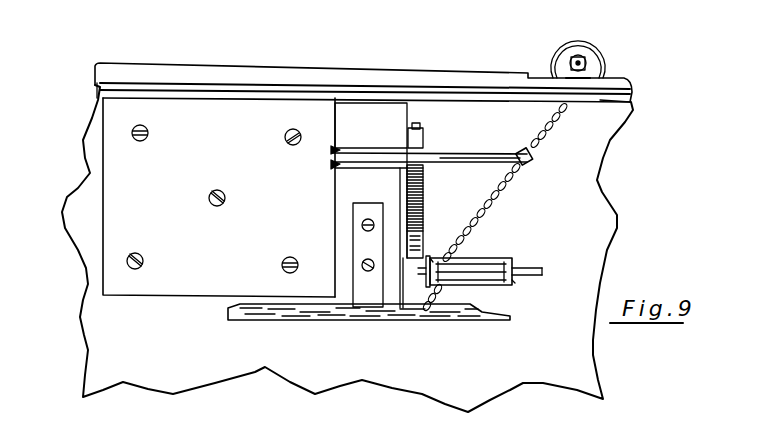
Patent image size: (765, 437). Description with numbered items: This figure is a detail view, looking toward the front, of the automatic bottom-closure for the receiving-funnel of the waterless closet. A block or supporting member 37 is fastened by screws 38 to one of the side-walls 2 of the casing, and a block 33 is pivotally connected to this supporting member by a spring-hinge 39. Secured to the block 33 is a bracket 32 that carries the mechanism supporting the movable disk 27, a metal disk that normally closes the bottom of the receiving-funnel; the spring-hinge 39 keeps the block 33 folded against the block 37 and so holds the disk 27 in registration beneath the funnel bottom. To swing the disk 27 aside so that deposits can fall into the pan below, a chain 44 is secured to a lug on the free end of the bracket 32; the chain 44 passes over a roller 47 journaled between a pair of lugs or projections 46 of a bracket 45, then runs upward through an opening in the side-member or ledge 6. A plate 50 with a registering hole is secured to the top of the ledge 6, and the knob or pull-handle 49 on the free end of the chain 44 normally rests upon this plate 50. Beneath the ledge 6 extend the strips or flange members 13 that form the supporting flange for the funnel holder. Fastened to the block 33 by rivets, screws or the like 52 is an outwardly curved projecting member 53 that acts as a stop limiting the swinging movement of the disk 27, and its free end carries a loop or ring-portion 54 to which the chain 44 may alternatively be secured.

The side-walls 2 is at (87, 252).
The side-members or ledges 6 is at (363, 68).
The strips or flange members 13 is at (607, 103).
The movable disk 27 is at (447, 318).
The bracket 32 is at (365, 242).
The block 33 is at (345, 198).
The block or supporting member 37 is at (158, 284).
The screws 38 is at (212, 190).
The spring-hinge 39 is at (427, 197).
The chain 44 is at (503, 188).
The bracket 45 is at (470, 258).
The lugs or projections 46 is at (430, 258).
The roller 47 is at (493, 263).
The knob or pull-handle 49 is at (588, 50).
The plate 50 is at (617, 74).
The rivets, screws or the like 52 is at (333, 149).
The outwardly curved projecting member 53 is at (490, 162).
The loop or ring-portion 54 is at (522, 150).